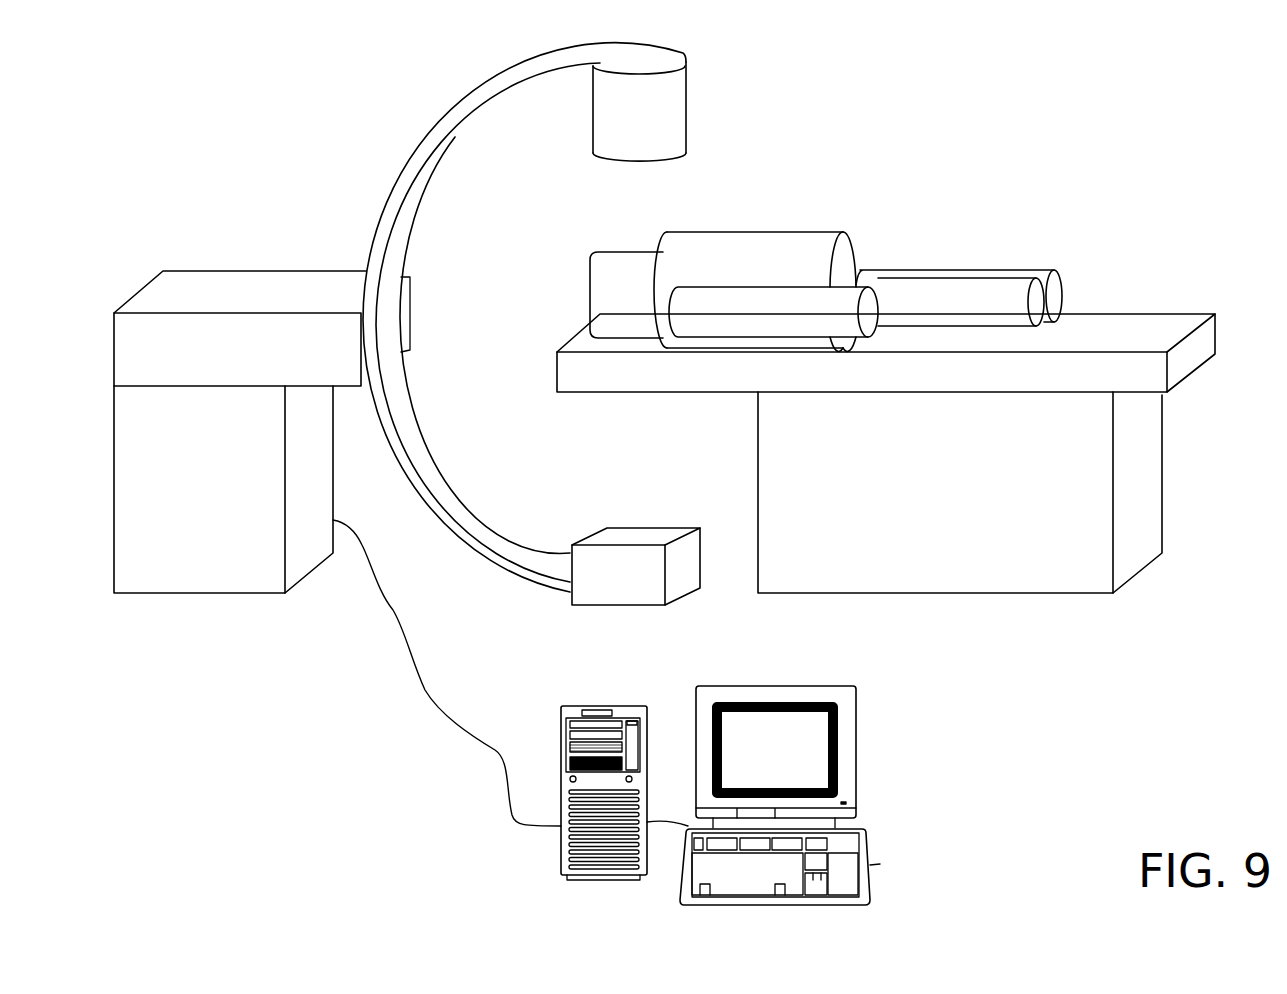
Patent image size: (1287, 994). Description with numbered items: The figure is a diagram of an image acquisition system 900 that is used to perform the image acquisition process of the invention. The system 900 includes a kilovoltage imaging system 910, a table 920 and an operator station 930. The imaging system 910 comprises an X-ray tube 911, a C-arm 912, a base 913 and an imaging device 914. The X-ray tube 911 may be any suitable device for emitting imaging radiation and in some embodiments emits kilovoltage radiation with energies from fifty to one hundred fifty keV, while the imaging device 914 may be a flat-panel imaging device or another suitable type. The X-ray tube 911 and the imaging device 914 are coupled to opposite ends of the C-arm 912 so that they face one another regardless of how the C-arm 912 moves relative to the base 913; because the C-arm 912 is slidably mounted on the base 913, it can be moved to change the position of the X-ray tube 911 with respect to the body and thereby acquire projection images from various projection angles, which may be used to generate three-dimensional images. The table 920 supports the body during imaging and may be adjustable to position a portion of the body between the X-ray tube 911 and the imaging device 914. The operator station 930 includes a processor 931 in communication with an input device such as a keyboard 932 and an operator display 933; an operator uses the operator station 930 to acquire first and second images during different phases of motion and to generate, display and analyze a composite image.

The system 900 is at (953, 78).
The kilovoltage imaging system 910 is at (726, 155).
The X-ray tube 911 is at (593, 112).
The C-arm 912 is at (489, 90).
The base 913 is at (237, 268).
The imaging device 914 is at (650, 538).
The table 920 is at (1113, 312).
The operator station 930 is at (893, 744).
The processor 931 is at (618, 705).
The keyboard 932 is at (872, 870).
The operator display 933 is at (778, 688).